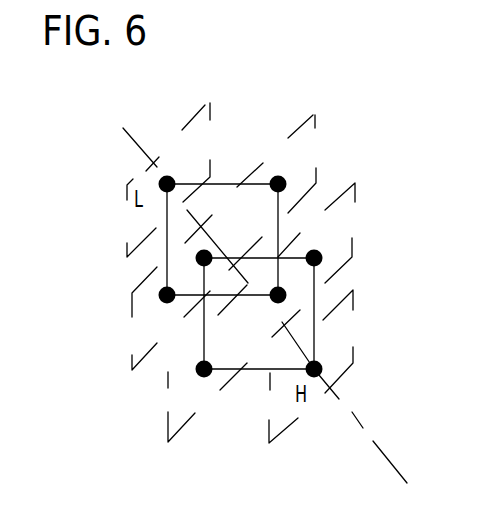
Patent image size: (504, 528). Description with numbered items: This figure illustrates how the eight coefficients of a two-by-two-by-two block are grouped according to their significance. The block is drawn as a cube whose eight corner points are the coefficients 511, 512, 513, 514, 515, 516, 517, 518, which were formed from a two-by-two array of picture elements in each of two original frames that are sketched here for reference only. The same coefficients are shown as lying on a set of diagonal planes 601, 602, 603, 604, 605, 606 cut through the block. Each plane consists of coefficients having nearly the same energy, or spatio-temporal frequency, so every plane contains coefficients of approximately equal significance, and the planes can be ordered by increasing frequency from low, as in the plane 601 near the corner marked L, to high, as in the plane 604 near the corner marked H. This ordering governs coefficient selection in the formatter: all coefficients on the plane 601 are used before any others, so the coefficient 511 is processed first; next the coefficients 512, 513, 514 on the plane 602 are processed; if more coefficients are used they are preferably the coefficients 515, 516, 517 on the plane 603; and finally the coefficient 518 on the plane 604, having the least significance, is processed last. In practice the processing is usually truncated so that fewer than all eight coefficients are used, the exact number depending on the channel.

The coefficient 511 is at (171, 179).
The coefficient 512 is at (281, 180).
The coefficient 513 is at (165, 298).
The coefficient 514 is at (207, 257).
The coefficient 515 is at (318, 254).
The coefficient 516 is at (275, 298).
The coefficient 517 is at (207, 377).
The coefficient 518 is at (322, 367).
The plane 601 is at (167, 231).
The plane 602 is at (205, 320).
The plane 603 is at (211, 106).
The plane 604 is at (315, 119).
The plane 605 is at (350, 193).
The plane 606 is at (357, 308).